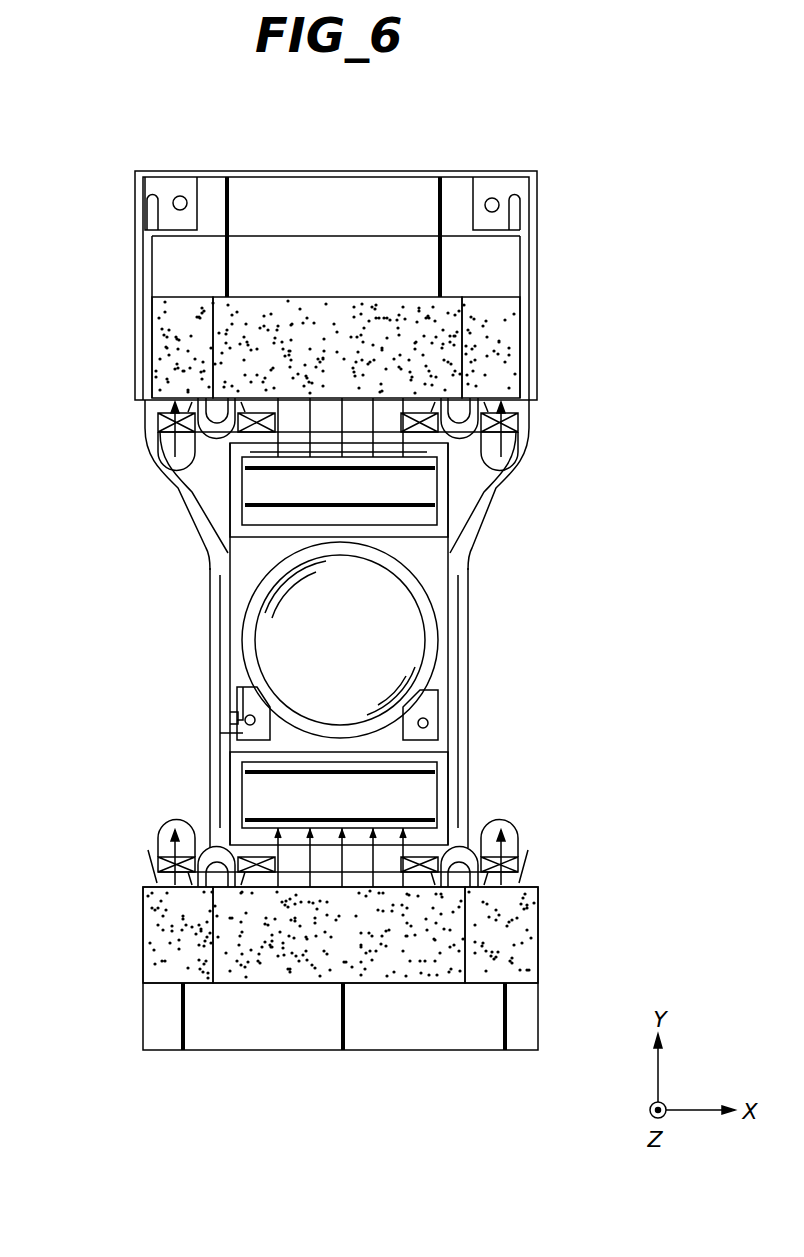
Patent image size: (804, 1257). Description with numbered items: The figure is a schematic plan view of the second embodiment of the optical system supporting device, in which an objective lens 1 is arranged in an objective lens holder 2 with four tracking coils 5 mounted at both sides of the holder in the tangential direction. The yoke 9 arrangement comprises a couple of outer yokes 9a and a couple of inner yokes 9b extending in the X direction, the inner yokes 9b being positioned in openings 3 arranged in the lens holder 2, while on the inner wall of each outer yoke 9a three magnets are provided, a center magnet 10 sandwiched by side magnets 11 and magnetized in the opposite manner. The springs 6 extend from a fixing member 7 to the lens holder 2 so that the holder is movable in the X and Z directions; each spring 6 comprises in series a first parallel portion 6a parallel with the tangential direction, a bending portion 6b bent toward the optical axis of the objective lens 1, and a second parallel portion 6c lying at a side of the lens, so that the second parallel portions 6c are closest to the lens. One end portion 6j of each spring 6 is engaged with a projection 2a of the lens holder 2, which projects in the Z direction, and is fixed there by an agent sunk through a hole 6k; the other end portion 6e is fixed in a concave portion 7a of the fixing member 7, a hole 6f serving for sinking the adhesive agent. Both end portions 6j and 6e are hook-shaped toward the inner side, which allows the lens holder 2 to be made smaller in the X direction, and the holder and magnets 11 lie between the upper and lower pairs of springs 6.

The objective lens 1 is at (402, 652).
The objective lens holder 2 is at (240, 591).
The projection 2a is at (237, 697).
The opening 3 is at (237, 530).
The tracking coil 5 is at (170, 476).
The spring 6 is at (488, 527).
The first parallel portion 6a is at (143, 259).
The bending portion 6b is at (176, 494).
The second parallel portion 6c is at (218, 636).
The other end portion of the spring 6e is at (178, 192).
The hole 6f is at (150, 200).
The end portion of the spring 6j is at (221, 734).
The hole 6k is at (232, 717).
The fixing member 7 is at (357, 186).
The concave portion 7a is at (199, 229).
The base 9 is at (383, 236).
The outer yoke 9a is at (308, 254).
The inner yoke 9b is at (463, 563).
The center magnet 10 is at (270, 307).
The side magnet 11 is at (165, 334).